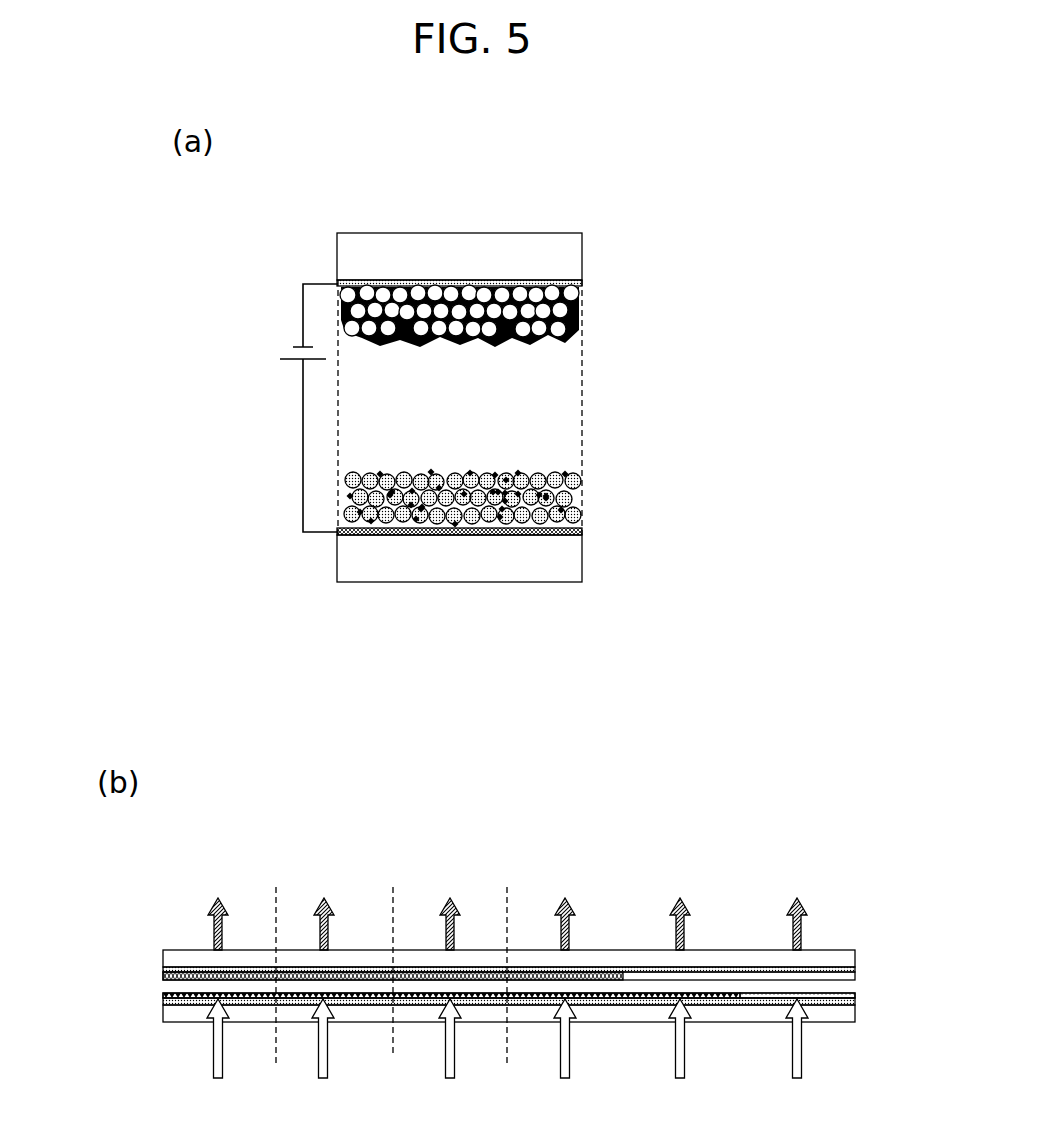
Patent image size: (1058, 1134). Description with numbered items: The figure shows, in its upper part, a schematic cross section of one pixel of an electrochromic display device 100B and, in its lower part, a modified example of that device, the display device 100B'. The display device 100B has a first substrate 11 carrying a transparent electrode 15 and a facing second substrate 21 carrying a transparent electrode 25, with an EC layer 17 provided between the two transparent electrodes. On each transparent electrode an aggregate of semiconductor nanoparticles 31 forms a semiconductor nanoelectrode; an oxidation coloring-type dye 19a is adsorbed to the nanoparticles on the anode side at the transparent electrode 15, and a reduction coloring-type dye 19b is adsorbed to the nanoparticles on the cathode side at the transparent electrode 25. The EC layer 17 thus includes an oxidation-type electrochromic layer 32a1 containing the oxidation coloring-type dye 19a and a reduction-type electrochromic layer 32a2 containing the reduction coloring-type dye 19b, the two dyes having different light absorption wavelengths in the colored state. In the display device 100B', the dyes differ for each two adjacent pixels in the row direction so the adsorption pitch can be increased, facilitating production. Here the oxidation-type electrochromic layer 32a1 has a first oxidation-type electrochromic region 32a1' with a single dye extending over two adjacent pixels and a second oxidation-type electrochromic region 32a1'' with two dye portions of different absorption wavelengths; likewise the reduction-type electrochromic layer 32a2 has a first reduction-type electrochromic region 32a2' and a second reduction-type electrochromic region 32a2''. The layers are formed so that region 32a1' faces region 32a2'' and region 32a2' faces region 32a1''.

The EC display device 100B is at (702, 187).
The EC display device 100B' is at (453, 826).
The first substrate 11 is at (567, 569).
The transparent electrode 15 is at (583, 530).
The EC layer 17 is at (668, 287).
The oxidation coloring-type dye 19a is at (564, 473).
The reduction coloring-type dye 19b is at (568, 333).
The second substrate 21 is at (567, 252).
The transparent electrode 25 is at (583, 281).
The semiconductor nanoparticles 31 is at (573, 297).
The oxidation-type electrochromic layer 32a1 is at (457, 747).
The reduction-type electrochromic layer 32a2 is at (457, 641).
The first oxidation-type electrochromic region 32a1' is at (391, 1084).
The first reduction-type electrochromic region 32a2' is at (282, 926).
The second oxidation-type electrochromic region 32a1'' is at (282, 1046).
The second reduction-type electrochromic region 32a2'' is at (395, 884).